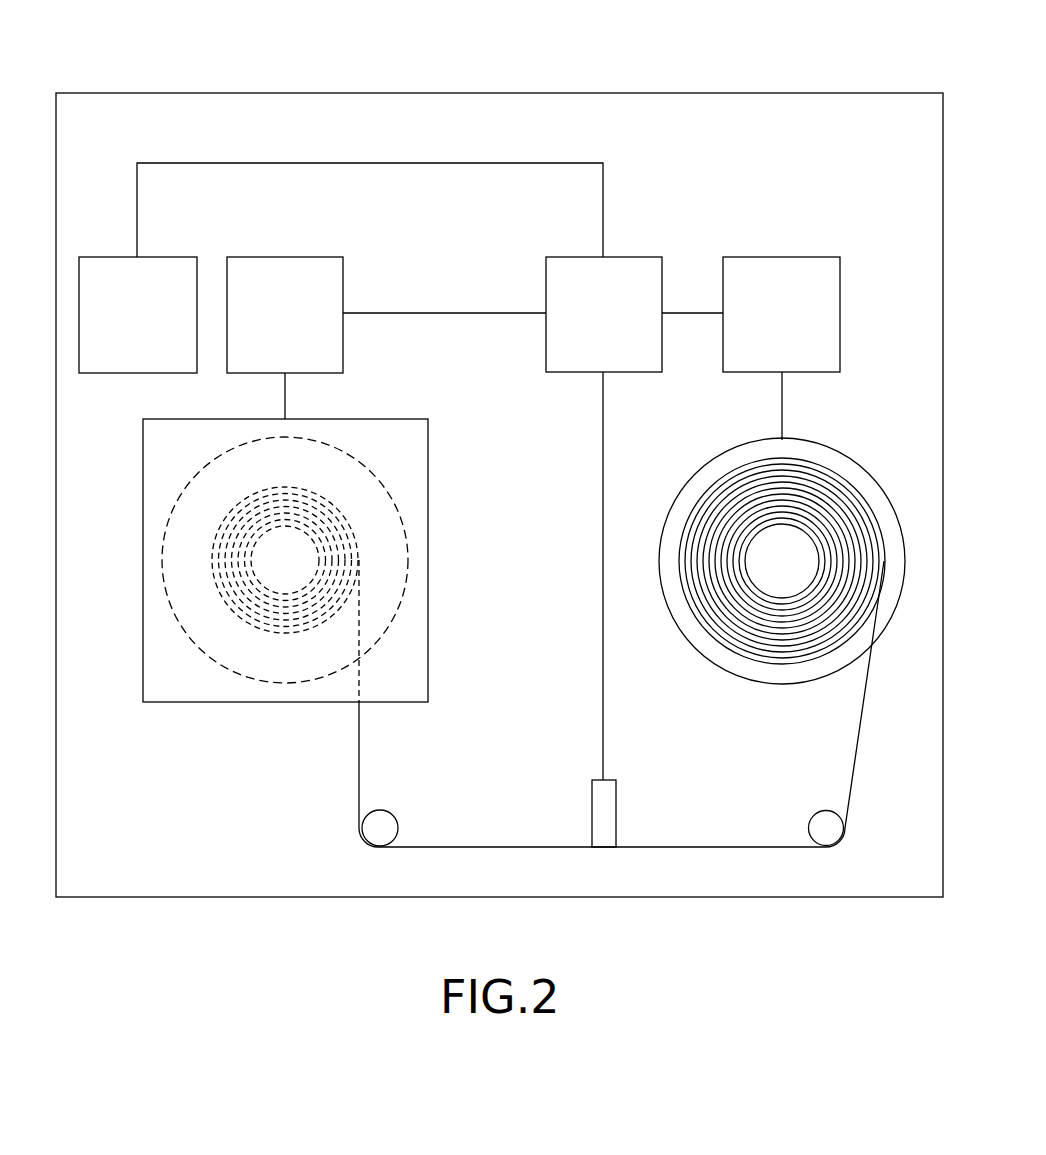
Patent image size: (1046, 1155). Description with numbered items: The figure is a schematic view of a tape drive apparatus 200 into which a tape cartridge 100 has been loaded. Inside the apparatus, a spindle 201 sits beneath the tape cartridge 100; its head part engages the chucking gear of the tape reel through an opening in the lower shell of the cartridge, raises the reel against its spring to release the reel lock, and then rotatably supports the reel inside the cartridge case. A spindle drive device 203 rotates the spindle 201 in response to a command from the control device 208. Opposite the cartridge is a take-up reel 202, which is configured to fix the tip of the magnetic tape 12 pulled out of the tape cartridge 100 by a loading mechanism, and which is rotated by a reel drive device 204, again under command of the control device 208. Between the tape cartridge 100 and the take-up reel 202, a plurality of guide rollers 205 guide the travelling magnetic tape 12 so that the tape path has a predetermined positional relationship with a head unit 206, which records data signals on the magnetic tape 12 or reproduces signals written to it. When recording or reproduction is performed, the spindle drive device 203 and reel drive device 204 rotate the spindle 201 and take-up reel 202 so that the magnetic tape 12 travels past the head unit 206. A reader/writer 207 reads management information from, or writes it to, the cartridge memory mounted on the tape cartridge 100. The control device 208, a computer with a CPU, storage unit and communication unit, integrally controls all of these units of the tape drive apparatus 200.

The tape drive apparatus 200 is at (565, 91).
The reader/writer 207 is at (178, 255).
The spindle drive device 203 is at (313, 255).
The control device 208 is at (647, 255).
The reel drive device 204 is at (777, 255).
The tape cartridge 100 is at (400, 418).
The spindle 201 is at (273, 575).
The magnetic tape 12 is at (473, 846).
The guide rollers 205 is at (388, 811).
The head unit 206 is at (617, 812).
The take-up reel 202 is at (869, 475).